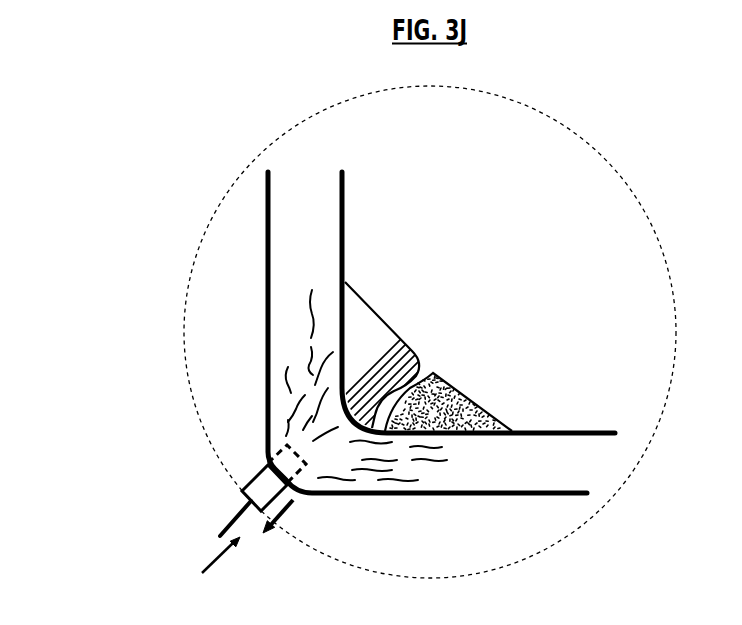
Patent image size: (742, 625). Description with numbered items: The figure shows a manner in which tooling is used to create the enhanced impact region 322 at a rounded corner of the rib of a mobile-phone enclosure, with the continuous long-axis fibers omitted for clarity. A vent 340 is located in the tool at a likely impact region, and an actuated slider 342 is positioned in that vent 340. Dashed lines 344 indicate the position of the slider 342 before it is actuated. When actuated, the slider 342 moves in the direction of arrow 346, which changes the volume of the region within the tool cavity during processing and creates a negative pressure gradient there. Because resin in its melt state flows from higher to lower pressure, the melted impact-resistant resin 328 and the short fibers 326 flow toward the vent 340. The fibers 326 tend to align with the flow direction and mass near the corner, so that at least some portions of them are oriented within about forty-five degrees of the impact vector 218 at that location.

The impact region 322 is at (597, 151).
The short fibers 326 is at (386, 321).
The impact-resistant resin 328 is at (395, 333).
The vent 340 is at (199, 462).
The slider 342 is at (242, 491).
The dashed lines 344 is at (266, 461).
The arrow 346 is at (283, 518).
The impact vector 218 is at (209, 569).